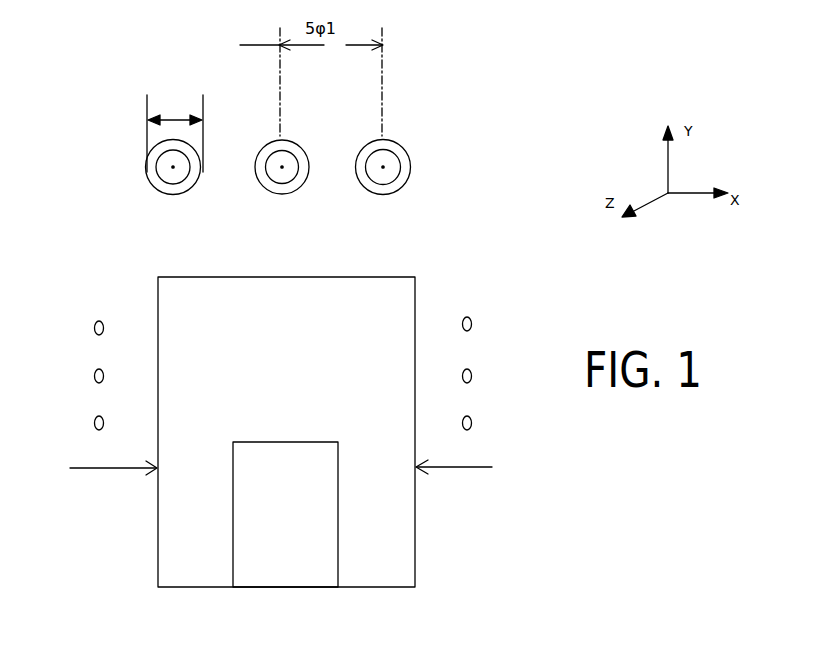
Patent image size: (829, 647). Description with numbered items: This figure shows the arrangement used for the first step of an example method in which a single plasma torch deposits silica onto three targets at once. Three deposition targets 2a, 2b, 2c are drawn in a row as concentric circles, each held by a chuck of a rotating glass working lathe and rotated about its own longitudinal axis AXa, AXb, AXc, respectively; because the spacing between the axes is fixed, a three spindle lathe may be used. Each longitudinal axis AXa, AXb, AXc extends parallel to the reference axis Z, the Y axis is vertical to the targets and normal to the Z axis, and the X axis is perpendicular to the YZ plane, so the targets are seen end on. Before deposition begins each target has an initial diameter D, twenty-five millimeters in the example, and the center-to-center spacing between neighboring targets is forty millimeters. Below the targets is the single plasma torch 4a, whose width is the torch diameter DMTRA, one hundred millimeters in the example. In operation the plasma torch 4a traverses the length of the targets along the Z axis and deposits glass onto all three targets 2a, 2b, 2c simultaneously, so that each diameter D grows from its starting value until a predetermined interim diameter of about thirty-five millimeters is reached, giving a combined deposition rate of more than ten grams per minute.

The deposition target 2a is at (135, 169).
The deposition target 2b is at (298, 134).
The deposition target 2c is at (408, 152).
The plasma torch 4a is at (430, 273).
The longitudinal axis AXa is at (165, 175).
The longitudinal axis AXb is at (278, 173).
The longitudinal axis AXc is at (379, 172).
The target diameter D is at (175, 119).
The plasma torch diameter DMTRA is at (496, 465).